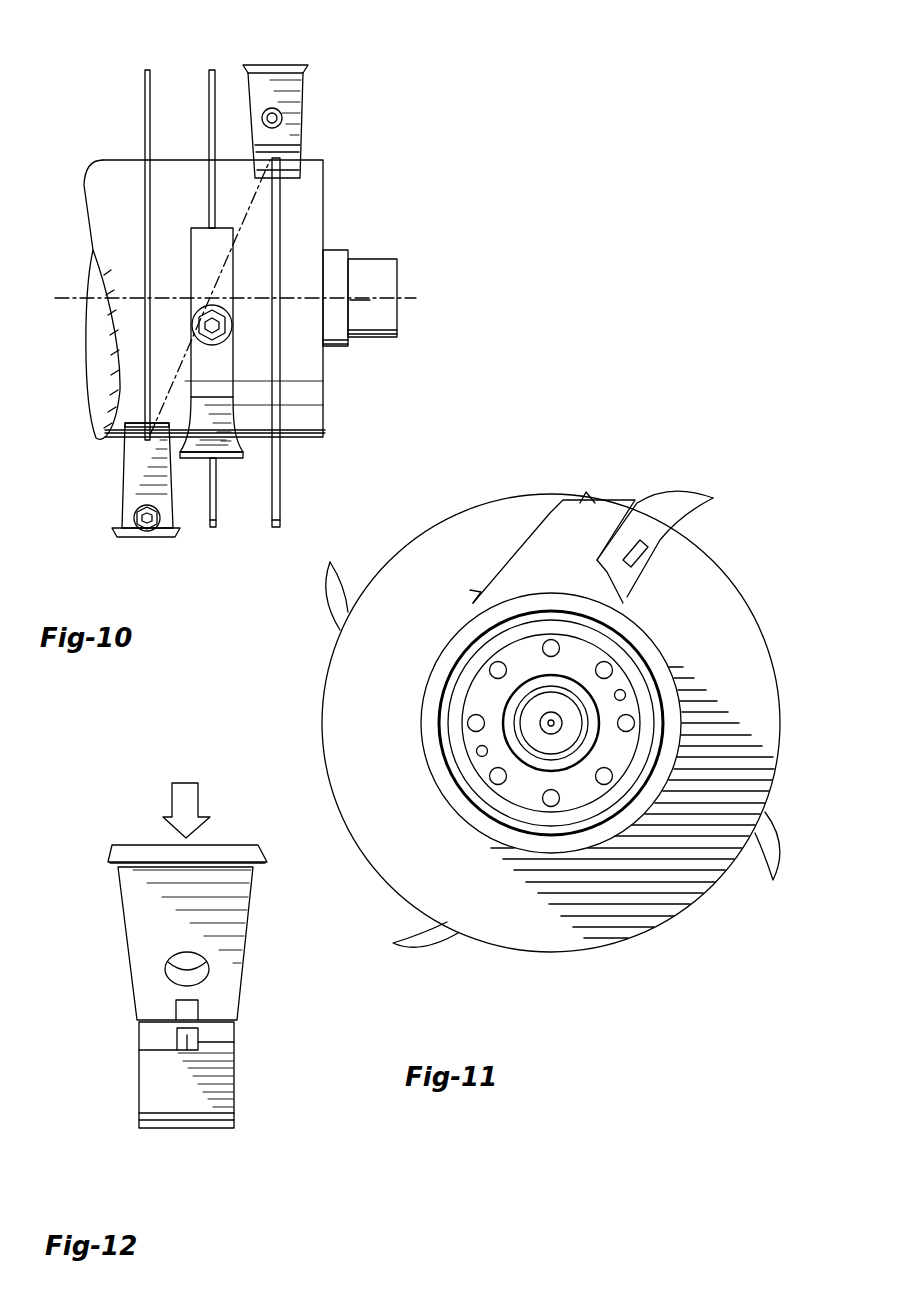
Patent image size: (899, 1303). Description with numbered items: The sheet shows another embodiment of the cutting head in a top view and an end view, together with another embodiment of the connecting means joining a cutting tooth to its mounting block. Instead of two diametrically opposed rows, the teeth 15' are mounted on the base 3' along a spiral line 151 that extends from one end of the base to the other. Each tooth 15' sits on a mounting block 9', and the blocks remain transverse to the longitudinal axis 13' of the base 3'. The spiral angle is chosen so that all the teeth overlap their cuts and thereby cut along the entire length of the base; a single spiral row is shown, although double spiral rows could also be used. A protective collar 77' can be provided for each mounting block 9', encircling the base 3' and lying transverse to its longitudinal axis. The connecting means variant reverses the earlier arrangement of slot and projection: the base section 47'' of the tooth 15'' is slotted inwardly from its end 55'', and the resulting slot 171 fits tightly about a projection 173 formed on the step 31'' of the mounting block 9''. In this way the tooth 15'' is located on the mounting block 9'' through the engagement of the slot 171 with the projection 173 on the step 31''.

In FIG. 10, the base 3' is at (235, 324).
In FIG. 11, the base 3' is at (578, 723).
In FIG. 10, the mounting block 9' is at (226, 309).
In FIG. 11, the mounting block 9' is at (552, 521).
In FIG. 10, the longitudinal axis 13' is at (400, 298).
In FIG. 10, the cutting tooth 15' is at (243, 312).
In FIG. 11, the cutting tooth 15' is at (559, 746).
In FIG. 10, the protective collar 77' is at (177, 222).
In FIG. 11, the protective collar 77' is at (814, 801).
In FIG. 10, the spiral line 151 is at (253, 200).
In FIG. 12, the tooth 15'' is at (171, 932).
In FIG. 12, the base section 47'' is at (144, 932).
In FIG. 12, the slot 171 is at (176, 1005).
In FIG. 12, the projection 173 is at (185, 1037).
In FIG. 12, the end 55'' is at (275, 1034).
In FIG. 12, the mounting block 9'' is at (171, 1074).
In FIG. 12, the step 31'' is at (287, 1095).